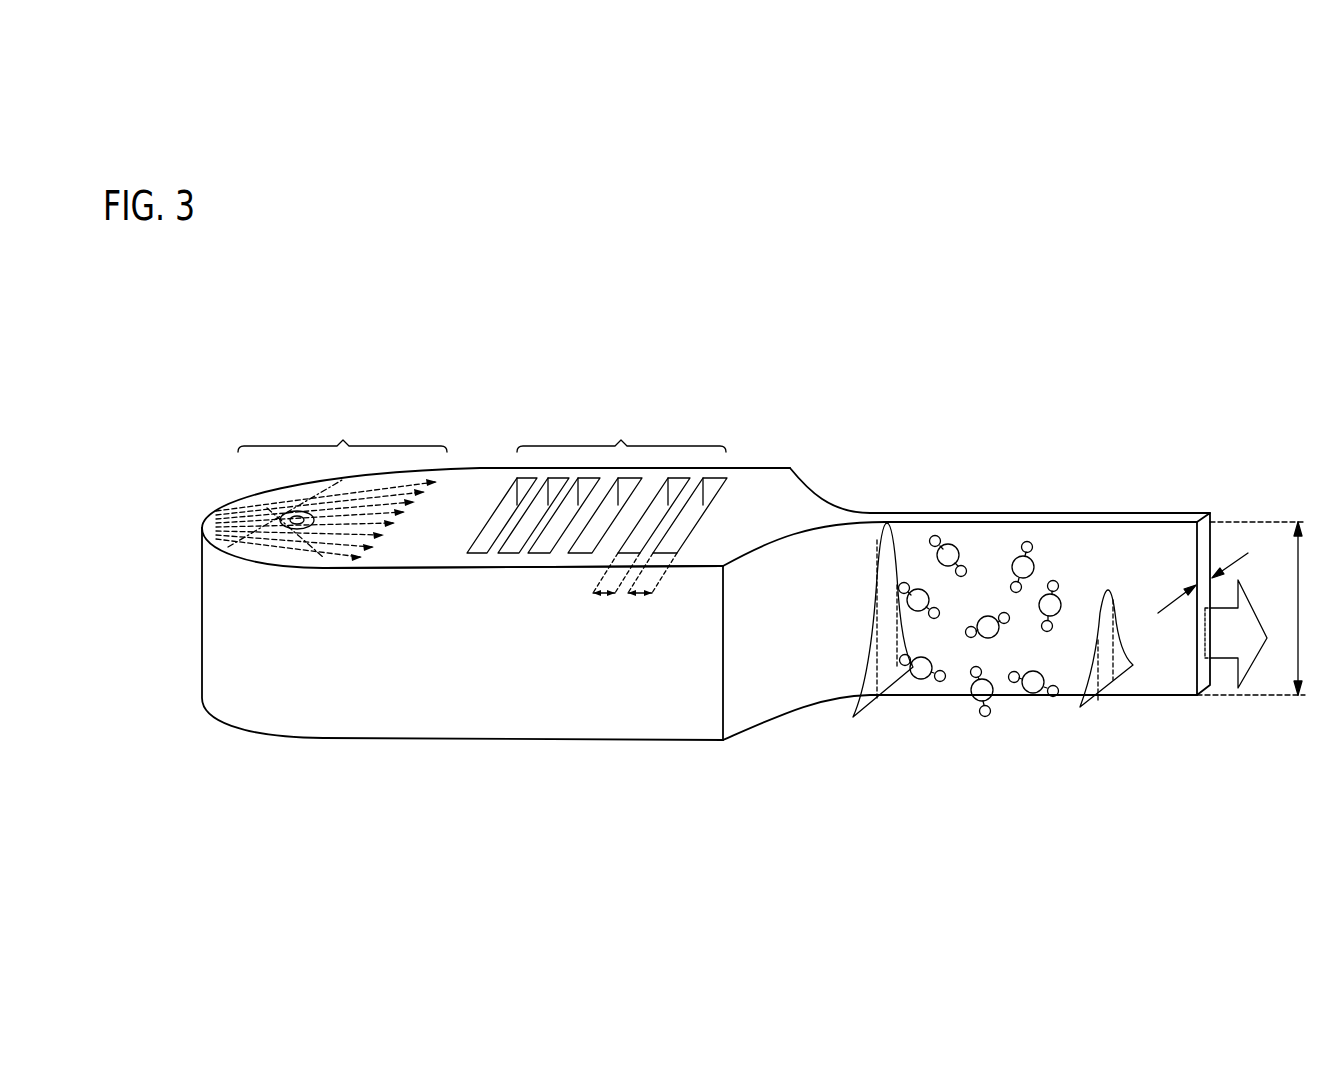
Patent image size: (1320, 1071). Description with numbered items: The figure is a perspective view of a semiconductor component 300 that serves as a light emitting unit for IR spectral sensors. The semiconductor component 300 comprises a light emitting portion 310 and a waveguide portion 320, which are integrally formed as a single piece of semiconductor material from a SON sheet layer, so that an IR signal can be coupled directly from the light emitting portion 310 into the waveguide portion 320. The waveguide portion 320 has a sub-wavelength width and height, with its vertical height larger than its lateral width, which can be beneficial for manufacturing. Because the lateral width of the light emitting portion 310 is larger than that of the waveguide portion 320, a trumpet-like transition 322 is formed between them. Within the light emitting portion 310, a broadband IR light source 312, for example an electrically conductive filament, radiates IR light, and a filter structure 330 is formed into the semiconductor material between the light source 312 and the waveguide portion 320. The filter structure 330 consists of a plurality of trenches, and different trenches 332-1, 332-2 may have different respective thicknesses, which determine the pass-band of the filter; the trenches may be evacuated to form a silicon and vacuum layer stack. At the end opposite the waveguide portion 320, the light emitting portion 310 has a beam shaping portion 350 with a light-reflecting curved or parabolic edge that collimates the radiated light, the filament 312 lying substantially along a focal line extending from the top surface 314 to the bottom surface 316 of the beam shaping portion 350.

The semiconductor component 300 is at (1158, 349).
The light emitting portion 310 is at (795, 323).
The broadband IR light source 312 is at (275, 498).
The top surface 314 is at (477, 487).
The bottom surface of source body 316 is at (417, 755).
The waveguide portion 320 is at (1031, 494).
The transition 322 is at (789, 672).
The filter structure 330 is at (627, 656).
The trench 332-1 is at (713, 478).
The trench 332-2 is at (668, 512).
The beam shaping portion 350 is at (198, 651).